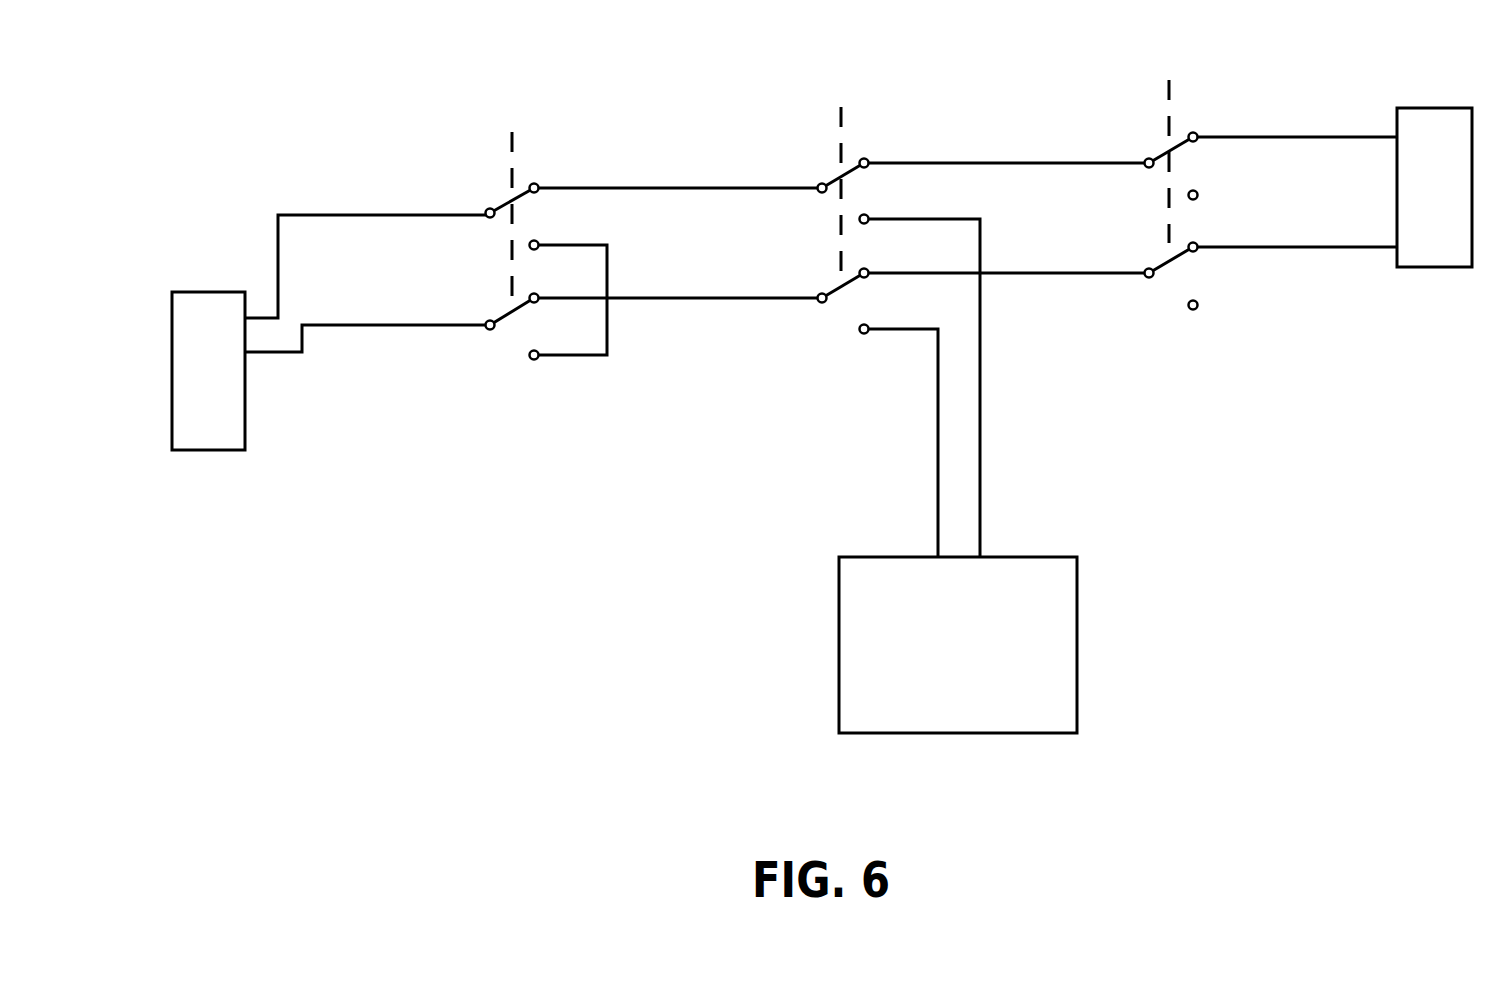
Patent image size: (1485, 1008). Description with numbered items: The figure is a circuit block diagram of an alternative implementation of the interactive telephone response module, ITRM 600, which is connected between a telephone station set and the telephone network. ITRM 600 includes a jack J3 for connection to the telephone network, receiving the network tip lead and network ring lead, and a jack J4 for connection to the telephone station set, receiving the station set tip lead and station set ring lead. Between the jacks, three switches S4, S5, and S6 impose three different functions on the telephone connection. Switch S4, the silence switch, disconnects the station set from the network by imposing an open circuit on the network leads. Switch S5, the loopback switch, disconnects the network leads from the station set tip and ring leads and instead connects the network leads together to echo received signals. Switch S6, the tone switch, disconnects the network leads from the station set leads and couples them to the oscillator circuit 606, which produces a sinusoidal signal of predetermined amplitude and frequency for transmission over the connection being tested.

The interactive telephone response module 600 is at (822, 413).
The oscillator circuit 606 is at (947, 733).
The jack J3 is at (208, 348).
The jack J4 is at (1434, 165).
The silence switch S4 is at (1171, 156).
The loopback switch S5 is at (548, 223).
The tone switch S6 is at (843, 180).